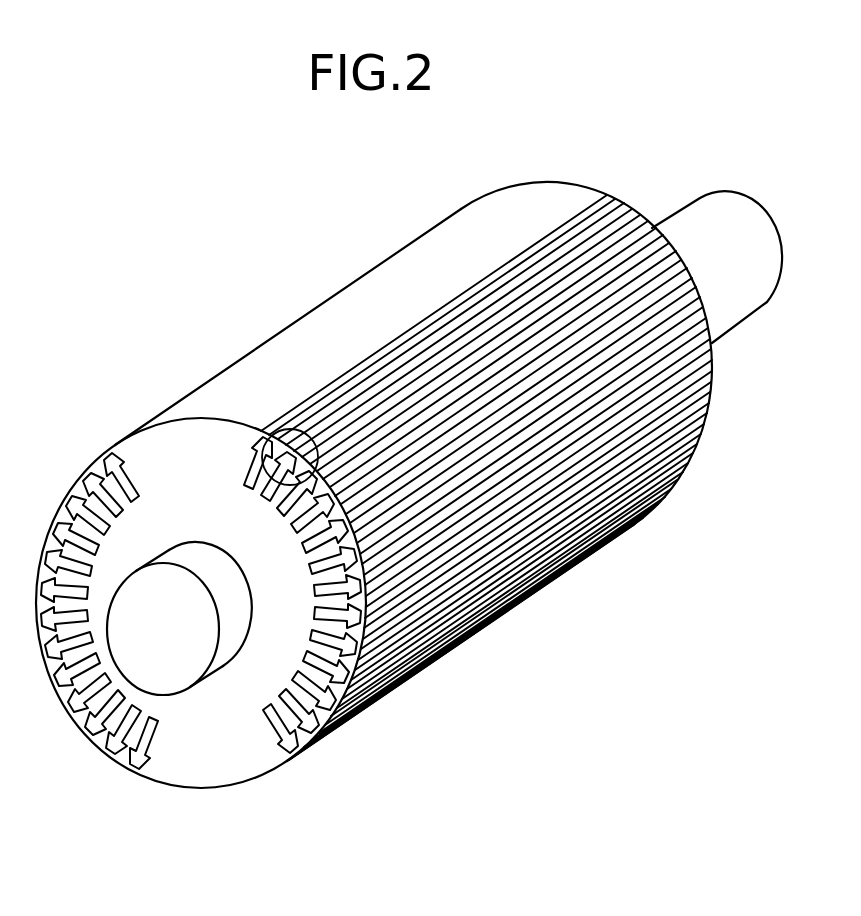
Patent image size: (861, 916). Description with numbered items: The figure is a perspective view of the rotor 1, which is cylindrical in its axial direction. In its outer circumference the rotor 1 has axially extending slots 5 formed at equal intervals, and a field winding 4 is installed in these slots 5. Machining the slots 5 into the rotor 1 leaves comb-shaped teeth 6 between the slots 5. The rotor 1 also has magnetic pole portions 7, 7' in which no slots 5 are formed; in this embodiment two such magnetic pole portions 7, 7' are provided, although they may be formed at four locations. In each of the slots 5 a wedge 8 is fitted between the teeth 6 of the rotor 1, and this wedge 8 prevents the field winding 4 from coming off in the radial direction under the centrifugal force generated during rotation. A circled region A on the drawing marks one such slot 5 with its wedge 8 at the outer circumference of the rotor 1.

The rotor 1 is at (409, 526).
The magnetic pole portion 7' is at (586, 353).
The magnetic pole portion 7 is at (201, 644).
The comb-shaped teeth 6 is at (201, 567).
The field winding 4 is at (249, 472).
The slots 5 is at (262, 725).
The wedge 8 is at (266, 440).
The detail portion A is at (304, 428).